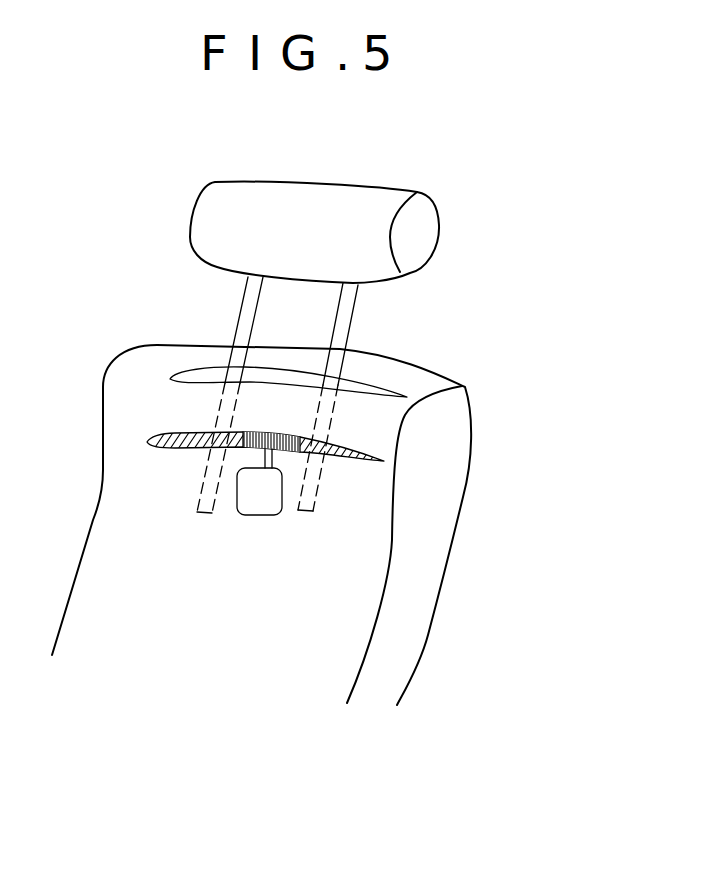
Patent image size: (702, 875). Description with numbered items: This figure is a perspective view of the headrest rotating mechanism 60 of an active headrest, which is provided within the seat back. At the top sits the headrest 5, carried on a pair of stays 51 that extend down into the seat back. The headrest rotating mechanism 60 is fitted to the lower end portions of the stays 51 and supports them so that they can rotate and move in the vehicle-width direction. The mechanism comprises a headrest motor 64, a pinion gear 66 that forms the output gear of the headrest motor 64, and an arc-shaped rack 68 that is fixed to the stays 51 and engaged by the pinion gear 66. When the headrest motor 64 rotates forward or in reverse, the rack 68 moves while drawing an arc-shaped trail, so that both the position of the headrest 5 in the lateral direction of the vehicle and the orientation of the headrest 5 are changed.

The headrest 5 is at (310, 208).
The stays 51 is at (250, 303).
The headrest rotating mechanism 60 is at (487, 475).
The headrest motor 64 is at (258, 503).
The pinion gear 66 is at (268, 432).
The rack 68 is at (367, 465).